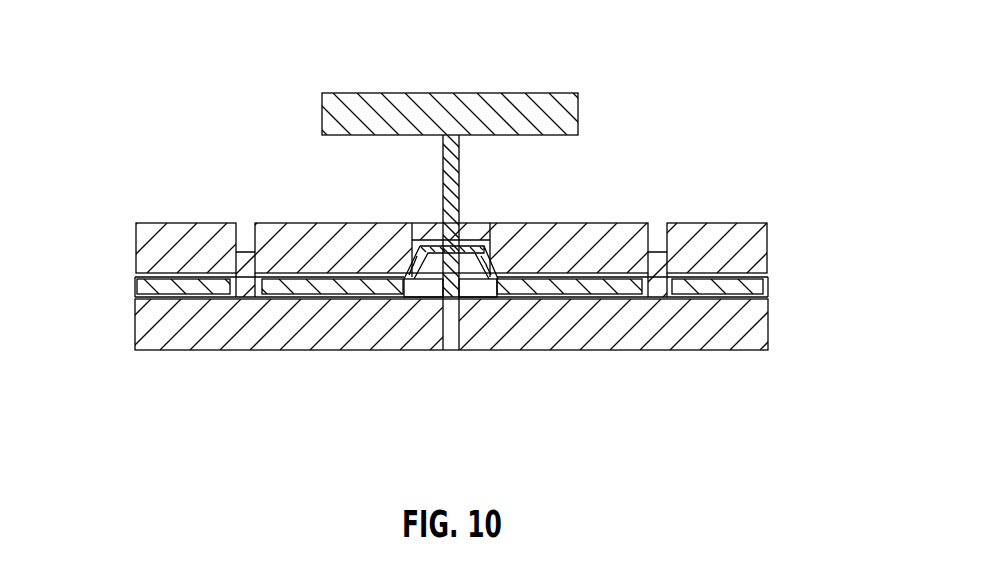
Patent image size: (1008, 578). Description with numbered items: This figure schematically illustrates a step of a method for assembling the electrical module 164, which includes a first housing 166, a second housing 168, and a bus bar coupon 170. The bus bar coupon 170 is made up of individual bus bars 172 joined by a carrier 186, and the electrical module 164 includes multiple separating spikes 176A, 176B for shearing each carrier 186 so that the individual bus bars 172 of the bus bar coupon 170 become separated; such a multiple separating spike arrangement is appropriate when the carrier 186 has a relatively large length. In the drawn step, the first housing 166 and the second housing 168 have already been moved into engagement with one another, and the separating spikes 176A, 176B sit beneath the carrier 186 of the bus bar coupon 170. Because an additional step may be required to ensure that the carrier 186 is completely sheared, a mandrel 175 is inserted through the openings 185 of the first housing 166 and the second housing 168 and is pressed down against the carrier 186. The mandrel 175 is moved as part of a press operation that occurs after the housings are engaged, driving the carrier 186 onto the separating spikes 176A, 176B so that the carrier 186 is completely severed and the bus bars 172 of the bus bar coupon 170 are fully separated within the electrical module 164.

The electrical module 164 is at (134, 116).
The first housing 166 is at (310, 342).
The second housing 168 is at (170, 240).
The bus bar coupon 170 is at (777, 283).
The bus bar 172 is at (270, 296).
The mandrel 175 is at (443, 172).
The separating spike 176A is at (425, 295).
The separating spike 176B is at (473, 295).
The openings 185 is at (462, 243).
The carrier 186 is at (500, 262).